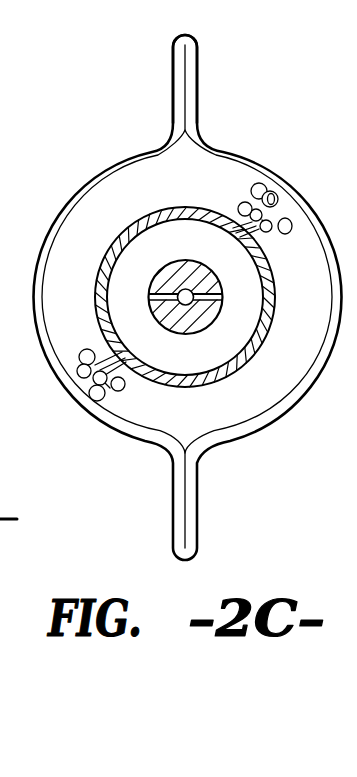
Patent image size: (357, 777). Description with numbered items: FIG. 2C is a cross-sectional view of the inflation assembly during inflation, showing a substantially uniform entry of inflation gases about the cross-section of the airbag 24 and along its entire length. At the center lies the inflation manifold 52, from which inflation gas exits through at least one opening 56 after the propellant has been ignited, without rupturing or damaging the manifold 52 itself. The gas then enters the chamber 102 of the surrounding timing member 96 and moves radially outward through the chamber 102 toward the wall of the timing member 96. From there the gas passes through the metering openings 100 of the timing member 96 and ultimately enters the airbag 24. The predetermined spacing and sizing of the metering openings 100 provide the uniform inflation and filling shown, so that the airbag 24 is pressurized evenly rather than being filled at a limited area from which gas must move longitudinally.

The airbag 24 is at (198, 67).
The inflation manifold 52 is at (216, 310).
The opening 56 is at (163, 288).
The timing member 96 is at (108, 245).
The metering openings 100 is at (228, 232).
The chamber 102 is at (172, 238).